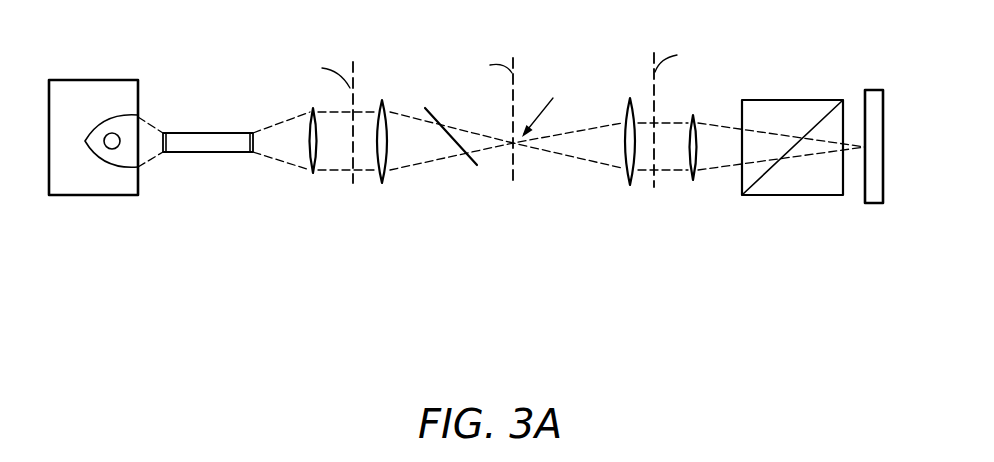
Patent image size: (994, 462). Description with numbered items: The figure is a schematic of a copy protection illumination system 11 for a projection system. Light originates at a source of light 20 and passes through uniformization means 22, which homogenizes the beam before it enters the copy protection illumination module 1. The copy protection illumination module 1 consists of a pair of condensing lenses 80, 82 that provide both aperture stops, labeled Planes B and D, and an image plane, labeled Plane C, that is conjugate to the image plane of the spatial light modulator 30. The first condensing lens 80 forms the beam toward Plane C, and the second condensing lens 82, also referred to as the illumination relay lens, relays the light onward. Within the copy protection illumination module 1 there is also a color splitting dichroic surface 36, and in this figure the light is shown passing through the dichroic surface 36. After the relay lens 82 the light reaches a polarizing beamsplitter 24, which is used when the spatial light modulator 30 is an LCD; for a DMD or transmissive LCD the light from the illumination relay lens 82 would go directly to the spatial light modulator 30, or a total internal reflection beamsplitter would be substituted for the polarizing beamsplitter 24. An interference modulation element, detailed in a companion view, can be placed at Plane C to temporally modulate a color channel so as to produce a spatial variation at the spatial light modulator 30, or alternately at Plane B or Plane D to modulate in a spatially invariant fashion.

The copy protection illumination system 11 is at (213, 291).
The source of light 20 is at (102, 78).
The uniformization means 22 is at (220, 152).
The copy protection illumination module 1 is at (713, 288).
The condensing lens 80 is at (390, 198).
The color splitting dichroic surface 36 is at (468, 162).
The condensing lens 82 is at (710, 205).
The polarizing beamsplitter 24 is at (788, 100).
The spatial light modulator 30 is at (882, 187).